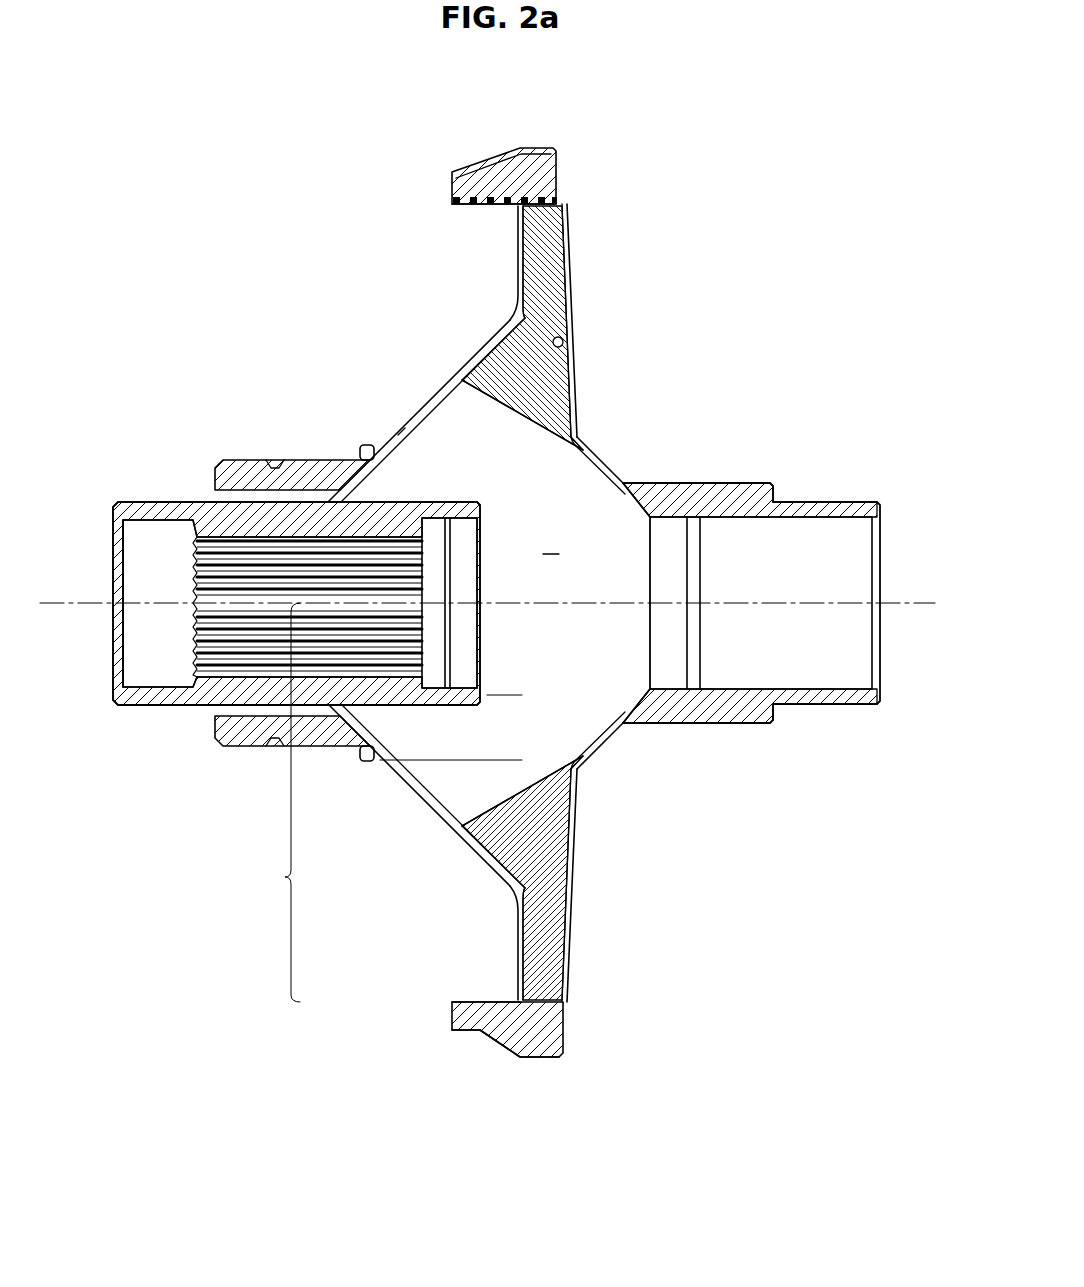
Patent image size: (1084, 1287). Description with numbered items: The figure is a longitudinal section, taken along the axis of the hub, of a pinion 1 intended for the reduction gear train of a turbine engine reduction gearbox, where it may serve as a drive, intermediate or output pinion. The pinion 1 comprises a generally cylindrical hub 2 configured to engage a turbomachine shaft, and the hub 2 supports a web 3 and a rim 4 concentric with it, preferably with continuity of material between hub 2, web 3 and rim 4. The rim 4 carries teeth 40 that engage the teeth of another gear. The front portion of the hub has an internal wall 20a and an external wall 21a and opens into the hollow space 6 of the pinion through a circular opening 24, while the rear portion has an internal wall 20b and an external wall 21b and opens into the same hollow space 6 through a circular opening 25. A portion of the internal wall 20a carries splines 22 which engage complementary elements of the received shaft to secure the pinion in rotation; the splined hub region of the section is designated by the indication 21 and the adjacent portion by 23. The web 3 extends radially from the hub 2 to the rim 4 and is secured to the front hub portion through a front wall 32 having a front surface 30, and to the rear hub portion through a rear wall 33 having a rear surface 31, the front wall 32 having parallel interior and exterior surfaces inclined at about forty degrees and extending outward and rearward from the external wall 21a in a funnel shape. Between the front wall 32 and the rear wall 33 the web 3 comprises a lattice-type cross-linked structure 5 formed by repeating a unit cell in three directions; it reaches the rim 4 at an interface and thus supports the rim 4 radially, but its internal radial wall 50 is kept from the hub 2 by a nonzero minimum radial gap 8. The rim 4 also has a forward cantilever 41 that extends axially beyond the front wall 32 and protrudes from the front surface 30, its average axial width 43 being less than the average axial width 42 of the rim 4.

The pinion 1 is at (752, 893).
The hub 2 is at (729, 571).
The web 3 is at (282, 802).
The rim 4 is at (540, 172).
The cross-linked structure 5 is at (582, 372).
The hollow space 6 is at (550, 541).
The minimum radial gap 8 is at (522, 695).
The internal wall 20a is at (170, 523).
The internal wall 20b is at (808, 518).
The hub body 21 is at (334, 590).
The external wall 21a is at (192, 500).
The external wall 21b is at (720, 483).
The splines 22 is at (258, 526).
The groove section 23 is at (480, 706).
The circular opening 24 is at (490, 627).
The circular opening 25 is at (640, 583).
The front surface 30 is at (415, 425).
The rear surface 31 is at (579, 322).
The front wall 32 is at (408, 432).
The rear wall 33 is at (564, 345).
The teeth 40 is at (445, 584).
The cantilever 41 is at (488, 212).
The average axial width 42 is at (557, 1090).
The average axial width 43 is at (520, 995).
The internal radial wall 50 is at (510, 418).